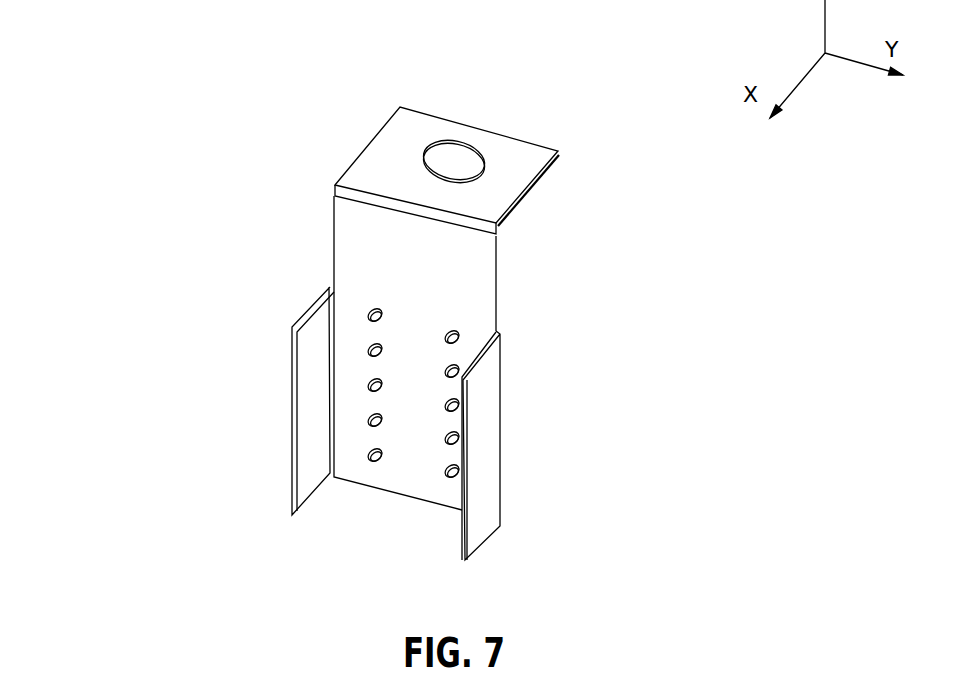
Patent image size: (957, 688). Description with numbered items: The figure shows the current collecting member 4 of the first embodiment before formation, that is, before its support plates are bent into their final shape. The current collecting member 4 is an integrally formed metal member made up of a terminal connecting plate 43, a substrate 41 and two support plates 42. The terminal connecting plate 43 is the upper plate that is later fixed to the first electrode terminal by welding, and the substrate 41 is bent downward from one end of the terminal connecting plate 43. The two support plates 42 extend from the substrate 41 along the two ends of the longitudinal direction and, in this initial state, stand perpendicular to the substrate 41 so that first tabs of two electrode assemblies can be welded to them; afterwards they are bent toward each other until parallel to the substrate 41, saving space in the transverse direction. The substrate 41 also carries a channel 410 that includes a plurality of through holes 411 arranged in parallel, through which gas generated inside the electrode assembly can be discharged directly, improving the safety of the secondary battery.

The current collecting member 4 is at (118, 178).
The substrate 41 is at (360, 248).
The channel 410 is at (413, 317).
The through hole 411 is at (372, 459).
The support plate 42 is at (292, 400).
The terminal connecting plate 43 is at (517, 153).